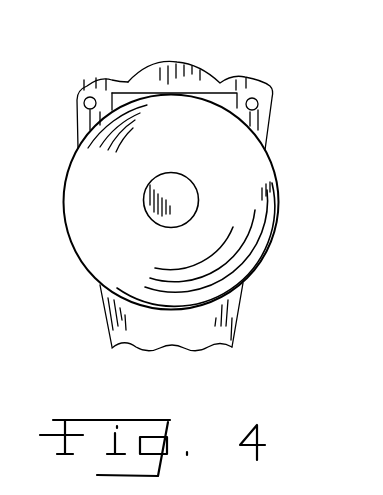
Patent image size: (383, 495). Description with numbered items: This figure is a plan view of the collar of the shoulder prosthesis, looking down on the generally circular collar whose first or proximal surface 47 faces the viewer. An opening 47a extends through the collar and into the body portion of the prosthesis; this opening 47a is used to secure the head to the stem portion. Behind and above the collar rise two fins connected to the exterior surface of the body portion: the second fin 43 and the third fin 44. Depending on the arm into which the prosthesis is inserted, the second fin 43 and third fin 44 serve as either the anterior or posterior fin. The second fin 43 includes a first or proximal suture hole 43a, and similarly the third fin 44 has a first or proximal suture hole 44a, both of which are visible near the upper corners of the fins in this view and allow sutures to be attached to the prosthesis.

The second fin 43 is at (85, 118).
The first or proximal suture hole 43a is at (88, 97).
The third fin 44 is at (258, 118).
The first or proximal suture hole 44a is at (256, 98).
The first or proximal surface 47 is at (243, 262).
The opening 47a is at (176, 202).